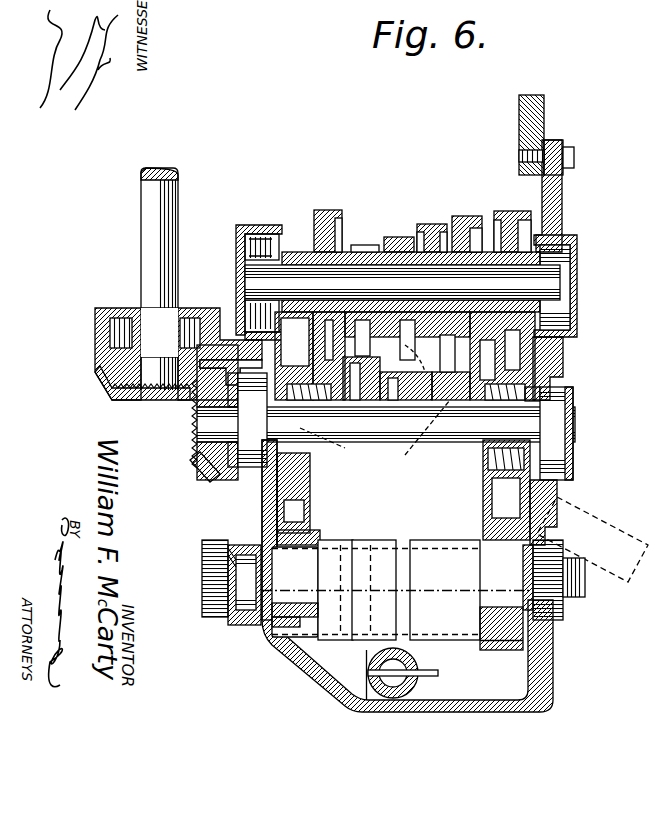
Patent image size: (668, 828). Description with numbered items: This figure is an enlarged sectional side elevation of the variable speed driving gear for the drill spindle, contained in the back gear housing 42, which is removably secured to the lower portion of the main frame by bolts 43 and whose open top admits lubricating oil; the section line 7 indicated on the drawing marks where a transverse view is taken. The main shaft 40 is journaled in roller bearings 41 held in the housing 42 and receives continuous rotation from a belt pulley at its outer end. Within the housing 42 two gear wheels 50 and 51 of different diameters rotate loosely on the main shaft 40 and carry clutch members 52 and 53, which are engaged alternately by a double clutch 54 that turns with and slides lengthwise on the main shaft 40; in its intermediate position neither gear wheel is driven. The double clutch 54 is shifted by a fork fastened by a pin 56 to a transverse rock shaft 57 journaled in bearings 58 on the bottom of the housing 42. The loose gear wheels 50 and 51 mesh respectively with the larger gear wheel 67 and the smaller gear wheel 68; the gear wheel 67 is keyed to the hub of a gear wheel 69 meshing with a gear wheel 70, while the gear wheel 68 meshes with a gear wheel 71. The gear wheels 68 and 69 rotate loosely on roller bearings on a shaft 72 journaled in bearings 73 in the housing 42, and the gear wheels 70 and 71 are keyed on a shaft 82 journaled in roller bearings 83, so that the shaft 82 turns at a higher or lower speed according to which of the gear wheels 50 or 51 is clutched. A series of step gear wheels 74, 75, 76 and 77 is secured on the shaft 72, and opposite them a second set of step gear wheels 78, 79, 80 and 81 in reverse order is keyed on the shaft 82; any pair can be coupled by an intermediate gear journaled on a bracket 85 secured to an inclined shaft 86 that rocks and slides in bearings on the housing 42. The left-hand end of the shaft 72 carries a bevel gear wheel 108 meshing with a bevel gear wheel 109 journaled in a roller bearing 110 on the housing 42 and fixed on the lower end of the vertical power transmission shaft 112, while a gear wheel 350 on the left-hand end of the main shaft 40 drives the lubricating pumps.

The section line 7 is at (350, 215).
The main shaft 40 is at (215, 548).
The bearings 41 is at (210, 600).
The back gear housing 42 is at (564, 357).
The bolts 43 is at (580, 160).
The gear wheel 50 is at (287, 618).
The gear wheel 51 is at (507, 642).
The clutch member 52 is at (330, 572).
The clutch member 53 is at (462, 582).
The double clutch 54 is at (370, 541).
The pin 56 is at (416, 676).
The rock shaft 57 is at (370, 670).
The bearings 58 is at (418, 694).
The gear wheel 67 is at (270, 502).
The gear wheel 68 is at (560, 494).
The gear wheel 69 is at (318, 490).
The gear wheel 70 is at (316, 262).
The gear wheel 71 is at (545, 225).
The shaft 72 is at (445, 414).
The bearings 73 is at (248, 468).
The step gear wheel 74 is at (455, 397).
The step gear wheel 75 is at (427, 386).
The step gear wheel 76 is at (380, 376).
The step gear wheel 77 is at (354, 364).
The step gear wheel 78 is at (468, 218).
The step gear wheel 79 is at (432, 228).
The step gear wheel 80 is at (398, 238).
The step gear wheel 81 is at (366, 246).
The shaft 82 is at (560, 286).
The roller bearings 83 is at (281, 235).
The bracket 85 is at (412, 350).
The inclined shaft 86 is at (633, 538).
The bevel gear wheel 108 is at (205, 472).
The bevel gear wheel 109 is at (102, 376).
The roller bearing 110 is at (96, 328).
The power transmission shaft 112 is at (152, 242).
The gear wheel 350 is at (212, 618).